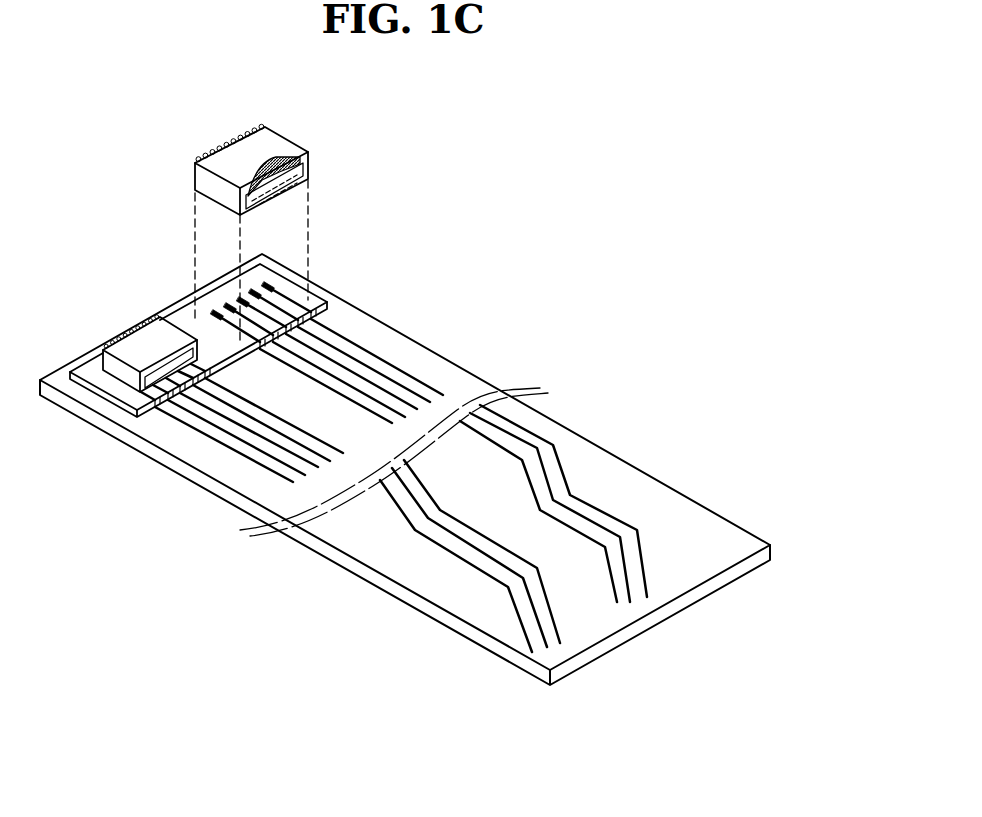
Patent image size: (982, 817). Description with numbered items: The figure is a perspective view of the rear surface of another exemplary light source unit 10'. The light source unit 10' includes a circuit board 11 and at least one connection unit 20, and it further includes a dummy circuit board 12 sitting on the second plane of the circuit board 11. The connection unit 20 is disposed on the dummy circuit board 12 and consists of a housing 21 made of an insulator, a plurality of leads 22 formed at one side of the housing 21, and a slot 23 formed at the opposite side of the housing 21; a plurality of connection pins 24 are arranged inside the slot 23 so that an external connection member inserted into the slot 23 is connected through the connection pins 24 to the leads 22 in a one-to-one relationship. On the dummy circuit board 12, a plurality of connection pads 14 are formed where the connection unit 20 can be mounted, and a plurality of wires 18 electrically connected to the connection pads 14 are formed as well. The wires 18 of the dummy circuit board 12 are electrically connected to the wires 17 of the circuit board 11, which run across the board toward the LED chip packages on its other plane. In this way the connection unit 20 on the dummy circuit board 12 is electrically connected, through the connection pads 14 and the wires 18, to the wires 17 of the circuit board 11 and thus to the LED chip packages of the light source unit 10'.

The light source unit 10' is at (405, 369).
The circuit board 11 is at (637, 497).
The dummy circuit board 12 is at (211, 311).
The connection pads 14 is at (197, 287).
The wires 17 is at (358, 345).
The wires 18 is at (308, 286).
The connection unit 20 is at (282, 199).
The housing 21 is at (290, 148).
The leads 22 is at (255, 128).
The slot 23 is at (265, 188).
The connection pins 24 is at (297, 170).